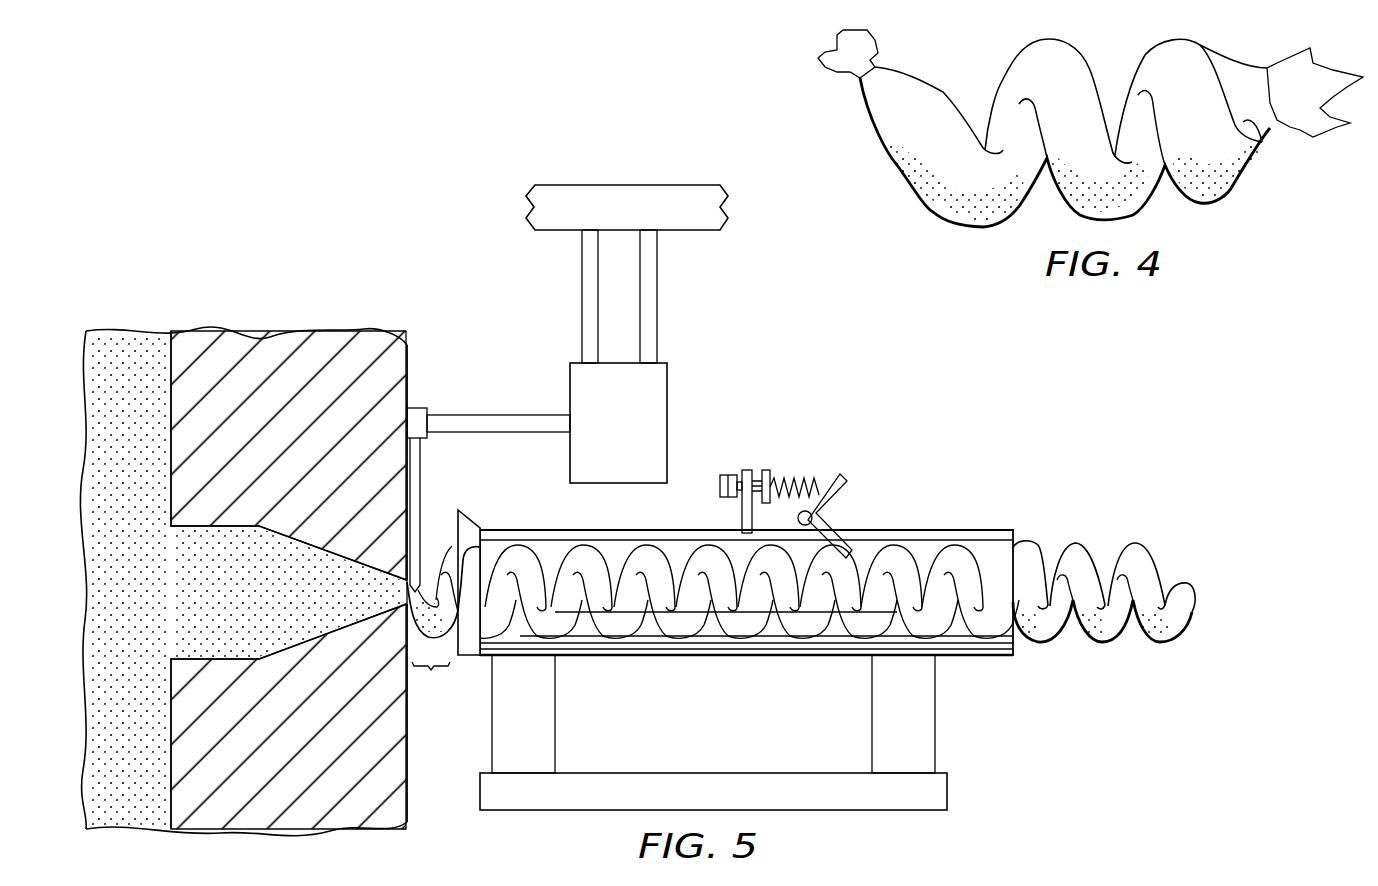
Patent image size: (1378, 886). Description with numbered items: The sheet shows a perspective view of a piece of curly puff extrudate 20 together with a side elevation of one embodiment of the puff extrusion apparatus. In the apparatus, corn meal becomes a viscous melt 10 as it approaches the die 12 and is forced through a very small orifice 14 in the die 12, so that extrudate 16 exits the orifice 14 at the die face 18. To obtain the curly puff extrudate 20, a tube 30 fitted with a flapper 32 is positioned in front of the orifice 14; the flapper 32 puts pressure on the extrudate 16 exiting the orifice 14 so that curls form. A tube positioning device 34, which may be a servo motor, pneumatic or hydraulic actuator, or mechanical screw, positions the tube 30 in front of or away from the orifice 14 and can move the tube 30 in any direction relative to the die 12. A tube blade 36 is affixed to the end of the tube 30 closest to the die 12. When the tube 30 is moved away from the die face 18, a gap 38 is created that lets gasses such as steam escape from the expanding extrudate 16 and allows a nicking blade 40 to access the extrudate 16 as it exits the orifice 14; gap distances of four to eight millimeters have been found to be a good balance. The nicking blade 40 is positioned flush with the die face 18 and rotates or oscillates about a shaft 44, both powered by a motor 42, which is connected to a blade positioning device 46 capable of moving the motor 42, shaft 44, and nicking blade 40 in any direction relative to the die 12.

In FIG. 5, the viscous melt 10 is at (403, 607).
In FIG. 5, the die 12 is at (279, 452).
In FIG. 5, the orifice 14 is at (402, 580).
In FIG. 5, the extrudate 16 is at (436, 600).
In FIG. 5, the die face 18 is at (408, 750).
In FIG. 4, the curly puff extrudate 20 is at (1214, 64).
In FIG. 5, the curly puff extrudate 20 is at (1130, 546).
In FIG. 5, the tube 30 is at (944, 528).
In FIG. 5, the flapper 32 is at (812, 468).
In FIG. 5, the tube positioning device 34 is at (948, 790).
In FIG. 5, the tube blade 36 is at (463, 516).
In FIG. 5, the gap 38 is at (431, 681).
In FIG. 5, the nicking blade 40 is at (421, 472).
In FIG. 5, the motor 42 is at (669, 430).
In FIG. 5, the shaft 44 is at (491, 415).
In FIG. 5, the blade positioning device 46 is at (633, 185).